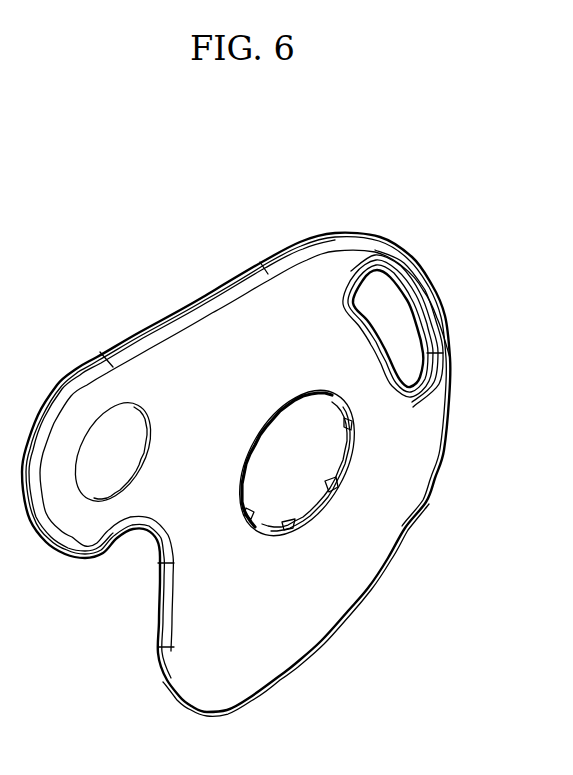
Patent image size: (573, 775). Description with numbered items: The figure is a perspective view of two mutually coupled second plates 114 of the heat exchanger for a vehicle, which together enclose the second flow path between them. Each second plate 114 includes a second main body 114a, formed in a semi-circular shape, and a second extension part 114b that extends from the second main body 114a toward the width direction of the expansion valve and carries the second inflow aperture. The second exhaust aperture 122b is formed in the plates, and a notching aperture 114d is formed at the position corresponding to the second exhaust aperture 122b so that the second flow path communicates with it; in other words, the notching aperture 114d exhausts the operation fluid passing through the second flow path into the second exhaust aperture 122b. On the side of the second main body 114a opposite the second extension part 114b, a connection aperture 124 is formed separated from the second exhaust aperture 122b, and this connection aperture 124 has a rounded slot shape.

The second plate 114 is at (97, 282).
The second main body 114a is at (328, 597).
The second extension part 114b is at (230, 317).
The notching aperture 114d is at (314, 490).
The second exhaust aperture 122b is at (298, 503).
The connection aperture 124 is at (420, 333).